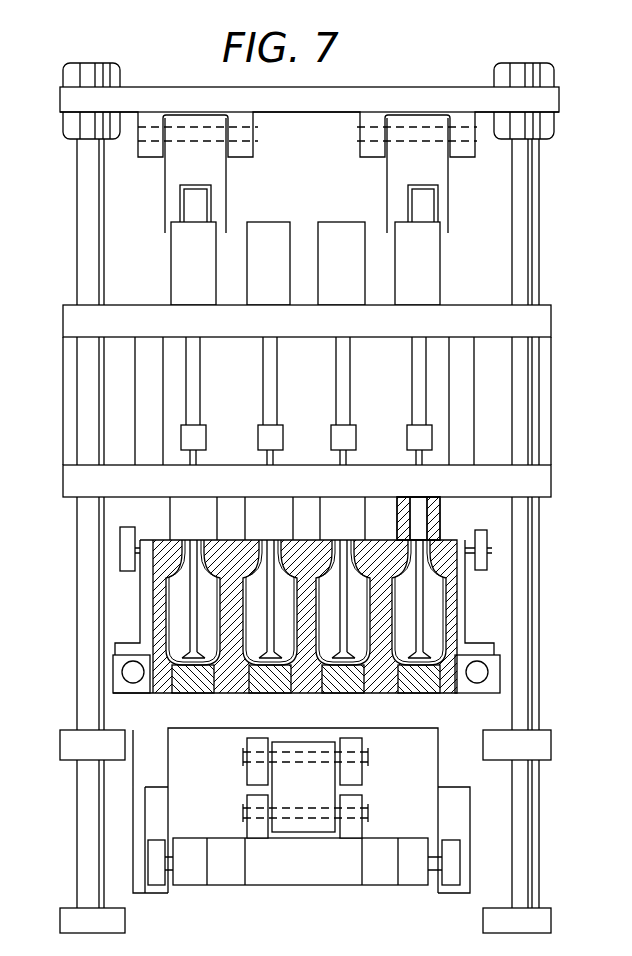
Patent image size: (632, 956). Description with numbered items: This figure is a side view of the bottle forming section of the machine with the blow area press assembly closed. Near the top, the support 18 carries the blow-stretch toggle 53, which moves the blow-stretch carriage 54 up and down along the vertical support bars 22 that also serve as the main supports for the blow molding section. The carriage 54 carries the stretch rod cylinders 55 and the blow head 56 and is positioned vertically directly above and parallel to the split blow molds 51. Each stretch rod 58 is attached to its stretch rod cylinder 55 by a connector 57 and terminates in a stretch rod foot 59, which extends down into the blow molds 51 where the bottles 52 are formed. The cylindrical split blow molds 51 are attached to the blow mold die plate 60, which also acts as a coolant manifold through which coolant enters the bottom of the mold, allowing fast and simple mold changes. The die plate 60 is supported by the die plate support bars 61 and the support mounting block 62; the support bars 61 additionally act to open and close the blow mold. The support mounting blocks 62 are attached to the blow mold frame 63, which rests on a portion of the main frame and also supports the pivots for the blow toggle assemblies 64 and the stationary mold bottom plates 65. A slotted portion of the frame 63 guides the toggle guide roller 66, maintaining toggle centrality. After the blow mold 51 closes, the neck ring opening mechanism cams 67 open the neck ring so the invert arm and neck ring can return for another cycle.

The support 18 is at (392, 88).
The vertical support bars 22 is at (540, 395).
The split blow molds 51 is at (165, 552).
The bottles 52 is at (455, 625).
The blow-stretch toggle 53 is at (438, 178).
The blow-stretch carriage 54 is at (548, 325).
The stretch rod cylinders 55 is at (432, 272).
The blow head 56 is at (435, 513).
The connector 57 is at (405, 431).
The stretch rod 58 is at (422, 605).
The stretch rod foot 59 is at (190, 650).
The blow mold die plate 60 is at (115, 648).
The die plate support bars 61 is at (485, 672).
The support mounting block 62 is at (118, 688).
The blow mold frame 63 is at (438, 770).
The blow toggle assemblies 64 is at (222, 808).
The stationary mold bottom plates 65 is at (193, 690).
The toggle guide roller 66 is at (455, 862).
The neck ring opening mechanism cams 67 is at (490, 558).